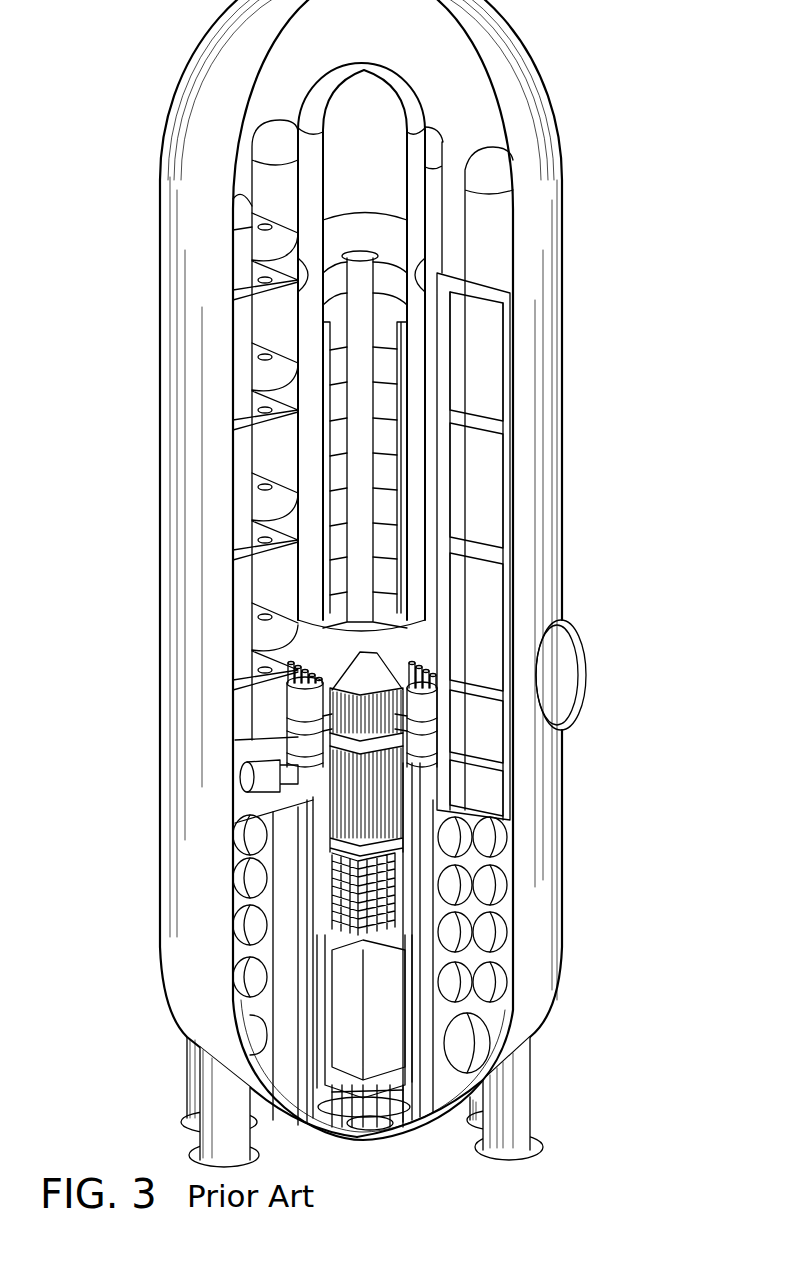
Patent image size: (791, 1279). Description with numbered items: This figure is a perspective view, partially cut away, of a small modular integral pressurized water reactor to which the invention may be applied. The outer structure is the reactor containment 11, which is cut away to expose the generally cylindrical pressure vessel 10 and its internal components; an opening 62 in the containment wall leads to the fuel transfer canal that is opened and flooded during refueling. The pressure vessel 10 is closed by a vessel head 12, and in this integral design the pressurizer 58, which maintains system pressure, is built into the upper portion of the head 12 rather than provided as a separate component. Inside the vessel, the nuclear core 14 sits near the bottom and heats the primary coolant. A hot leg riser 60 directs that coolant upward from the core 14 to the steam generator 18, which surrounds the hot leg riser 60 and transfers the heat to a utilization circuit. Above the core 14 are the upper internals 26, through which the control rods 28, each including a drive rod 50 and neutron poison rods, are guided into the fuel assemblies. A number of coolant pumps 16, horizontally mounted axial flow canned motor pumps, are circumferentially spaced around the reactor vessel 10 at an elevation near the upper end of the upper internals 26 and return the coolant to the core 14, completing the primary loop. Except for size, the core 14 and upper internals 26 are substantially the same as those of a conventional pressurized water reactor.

The pressure vessel 10 is at (407, 883).
The reactor containment 11 is at (563, 582).
The closure head 12 is at (419, 375).
The nuclear core 14 is at (377, 1010).
The coolant pump 16 is at (243, 780).
The steam generator 18 is at (392, 467).
The upper internals 26 is at (337, 883).
The control rods 28 is at (388, 932).
The drive rod 50 is at (490, 840).
The pressurizer 58 is at (385, 185).
The hot leg riser 60 is at (362, 508).
The opening 62 is at (572, 680).